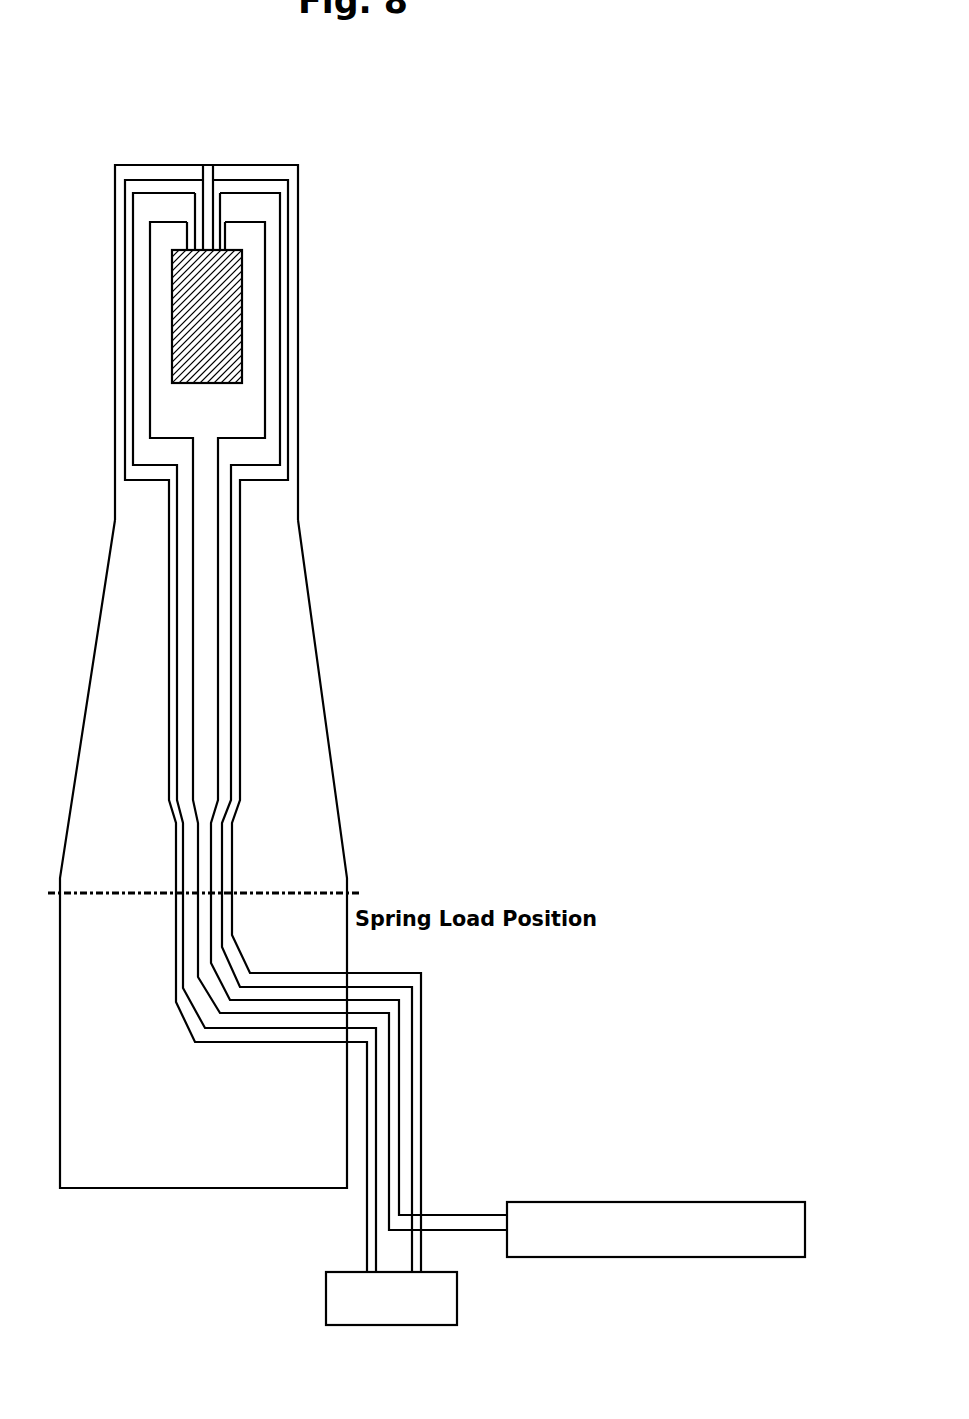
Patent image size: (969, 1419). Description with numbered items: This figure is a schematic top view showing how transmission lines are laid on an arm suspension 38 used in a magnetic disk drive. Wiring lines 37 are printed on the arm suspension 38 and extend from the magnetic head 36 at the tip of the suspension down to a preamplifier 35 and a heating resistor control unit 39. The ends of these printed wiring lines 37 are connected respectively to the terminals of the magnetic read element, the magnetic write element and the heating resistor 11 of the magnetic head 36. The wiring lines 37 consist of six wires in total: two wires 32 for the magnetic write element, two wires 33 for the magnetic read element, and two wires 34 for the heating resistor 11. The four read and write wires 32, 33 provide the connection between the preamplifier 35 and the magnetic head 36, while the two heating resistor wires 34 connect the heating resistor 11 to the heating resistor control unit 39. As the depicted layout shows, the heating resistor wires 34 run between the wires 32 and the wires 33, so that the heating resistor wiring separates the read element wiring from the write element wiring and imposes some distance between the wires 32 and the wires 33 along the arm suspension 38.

The heating resistor 11 is at (240, 265).
The magnetic head 36 is at (227, 325).
The wiring lines 37 is at (269, 553).
The wires for the magnetic write element 32 is at (232, 635).
The arm suspension 38 is at (285, 653).
The wires for the heating resistor 34 is at (193, 732).
The wires for the magnetic read element 33 is at (177, 617).
The preamplifier 35 is at (457, 1308).
The heating resistor control unit 39 is at (643, 1200).